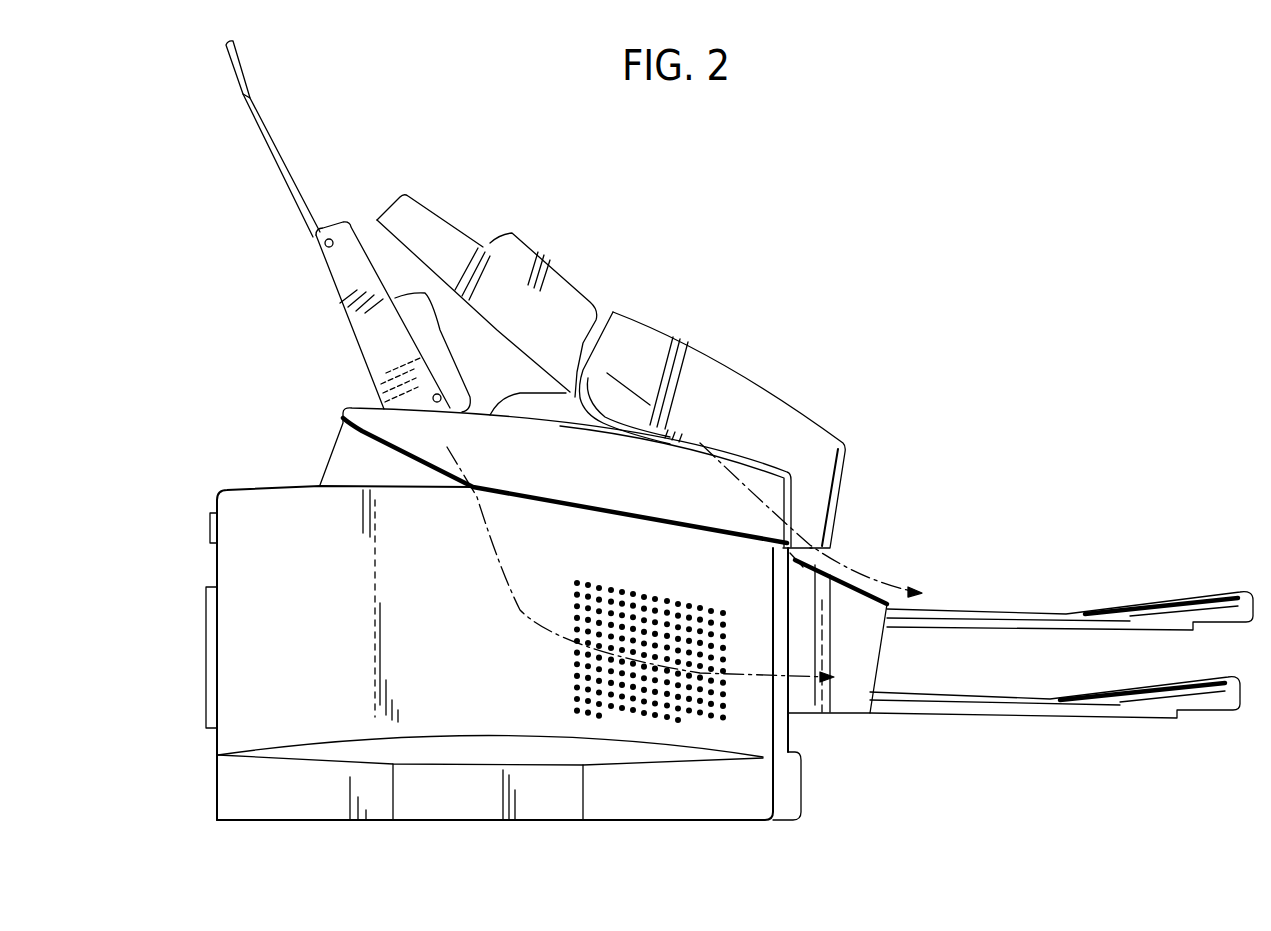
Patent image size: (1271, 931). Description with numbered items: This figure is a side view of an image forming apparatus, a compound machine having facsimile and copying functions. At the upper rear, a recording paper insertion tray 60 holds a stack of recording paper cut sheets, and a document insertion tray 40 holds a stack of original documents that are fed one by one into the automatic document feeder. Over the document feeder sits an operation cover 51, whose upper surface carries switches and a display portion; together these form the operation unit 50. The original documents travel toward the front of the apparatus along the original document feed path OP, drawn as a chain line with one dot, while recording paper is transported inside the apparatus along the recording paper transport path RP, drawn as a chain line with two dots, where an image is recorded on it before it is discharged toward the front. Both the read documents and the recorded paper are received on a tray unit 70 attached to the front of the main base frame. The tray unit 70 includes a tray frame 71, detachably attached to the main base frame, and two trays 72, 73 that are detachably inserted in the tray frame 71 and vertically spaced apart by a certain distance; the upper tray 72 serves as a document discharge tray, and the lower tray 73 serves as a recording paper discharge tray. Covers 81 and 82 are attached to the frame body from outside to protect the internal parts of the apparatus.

The document insertion tray 40 is at (437, 230).
The operation unit 50 is at (731, 398).
The operation cover 51 is at (800, 417).
The recording paper insertion tray 60 is at (282, 157).
The tray unit 70 is at (1020, 695).
The tray frame 71 is at (853, 697).
The upper tray 72 is at (978, 628).
The lower tray 73 is at (850, 766).
The cover 81 is at (485, 790).
The cover 82 is at (345, 413).
The recording paper transport path RP is at (515, 627).
The original document feed path OP is at (898, 575).